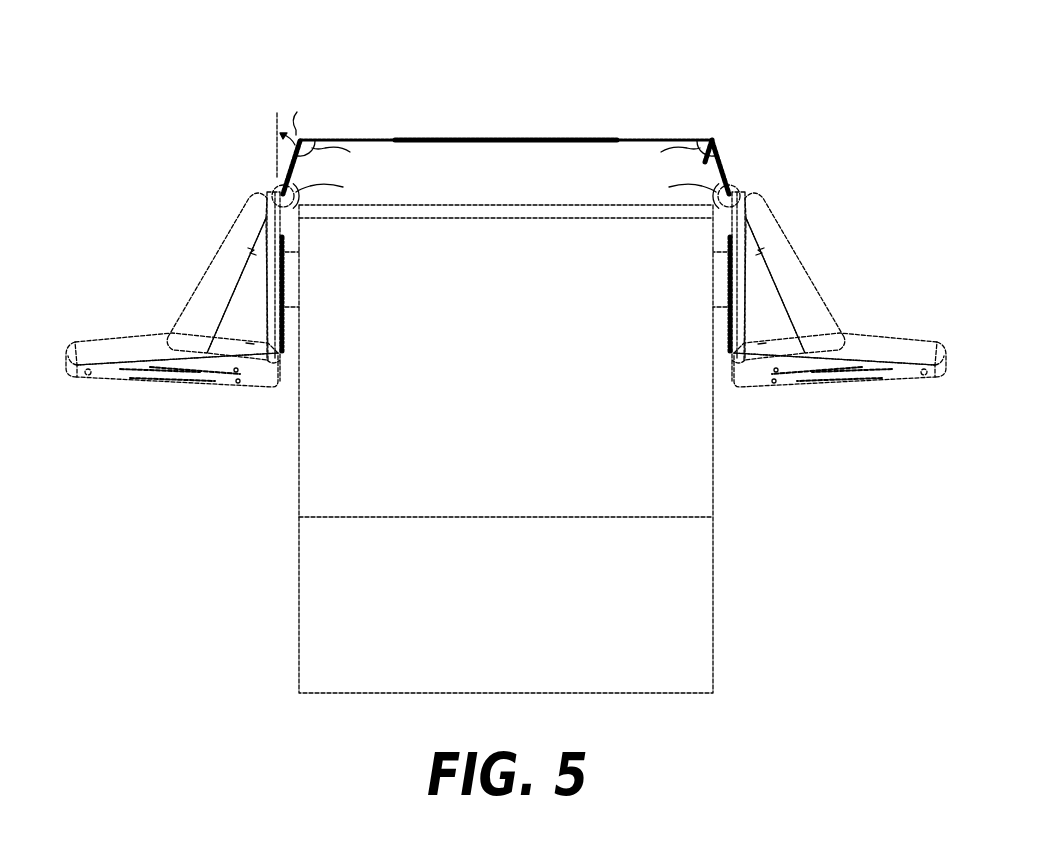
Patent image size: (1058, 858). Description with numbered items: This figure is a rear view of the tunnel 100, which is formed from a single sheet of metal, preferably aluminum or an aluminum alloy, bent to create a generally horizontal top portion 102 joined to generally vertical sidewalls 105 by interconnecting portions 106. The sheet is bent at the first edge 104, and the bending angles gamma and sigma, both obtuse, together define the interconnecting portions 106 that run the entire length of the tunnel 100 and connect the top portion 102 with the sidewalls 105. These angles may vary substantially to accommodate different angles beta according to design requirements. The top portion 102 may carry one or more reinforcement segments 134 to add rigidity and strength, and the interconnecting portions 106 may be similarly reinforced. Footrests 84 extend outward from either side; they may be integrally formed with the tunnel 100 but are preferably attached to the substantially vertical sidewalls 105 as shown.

The tunnel 100 is at (516, 46).
The top portion 102 is at (546, 138).
The first edge 104 is at (712, 139).
The sidewalls 105 is at (732, 333).
The interconnecting portions 106 is at (725, 167).
The reinforcement segments 134 is at (426, 138).
The footrests 84 is at (890, 348).